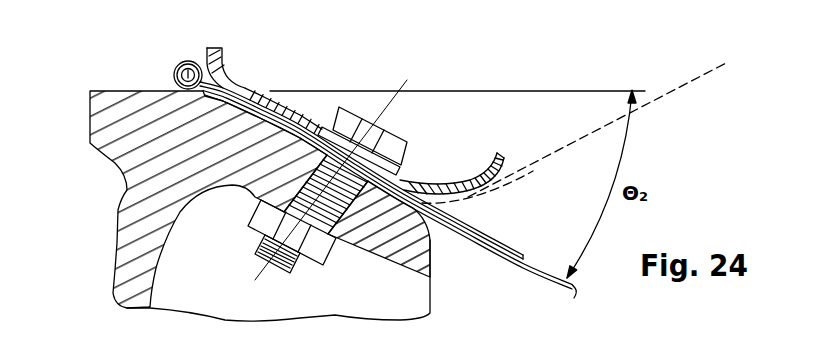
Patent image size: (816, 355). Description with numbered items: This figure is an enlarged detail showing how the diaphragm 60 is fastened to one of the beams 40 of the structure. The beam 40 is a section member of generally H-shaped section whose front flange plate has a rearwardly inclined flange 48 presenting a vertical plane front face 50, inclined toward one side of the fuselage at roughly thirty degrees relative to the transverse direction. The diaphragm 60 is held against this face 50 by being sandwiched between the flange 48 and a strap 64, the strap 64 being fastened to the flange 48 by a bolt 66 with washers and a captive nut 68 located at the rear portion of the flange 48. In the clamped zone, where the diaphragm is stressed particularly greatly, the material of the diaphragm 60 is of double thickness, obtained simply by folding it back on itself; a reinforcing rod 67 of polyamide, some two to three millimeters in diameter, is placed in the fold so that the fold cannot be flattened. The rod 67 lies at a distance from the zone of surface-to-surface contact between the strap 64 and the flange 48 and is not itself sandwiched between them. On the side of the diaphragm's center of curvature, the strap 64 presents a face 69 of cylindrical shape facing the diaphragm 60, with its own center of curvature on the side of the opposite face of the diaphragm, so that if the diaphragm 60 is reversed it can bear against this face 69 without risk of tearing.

The beam 40 is at (142, 134).
The flange 48 is at (407, 250).
The front face 50 is at (247, 100).
The diaphragm 60 is at (532, 270).
The strap 64 is at (470, 178).
The bolt 66 is at (347, 113).
The rod 67 is at (188, 74).
The captive nut 68 is at (320, 242).
The cylindrical face 69 is at (490, 206).